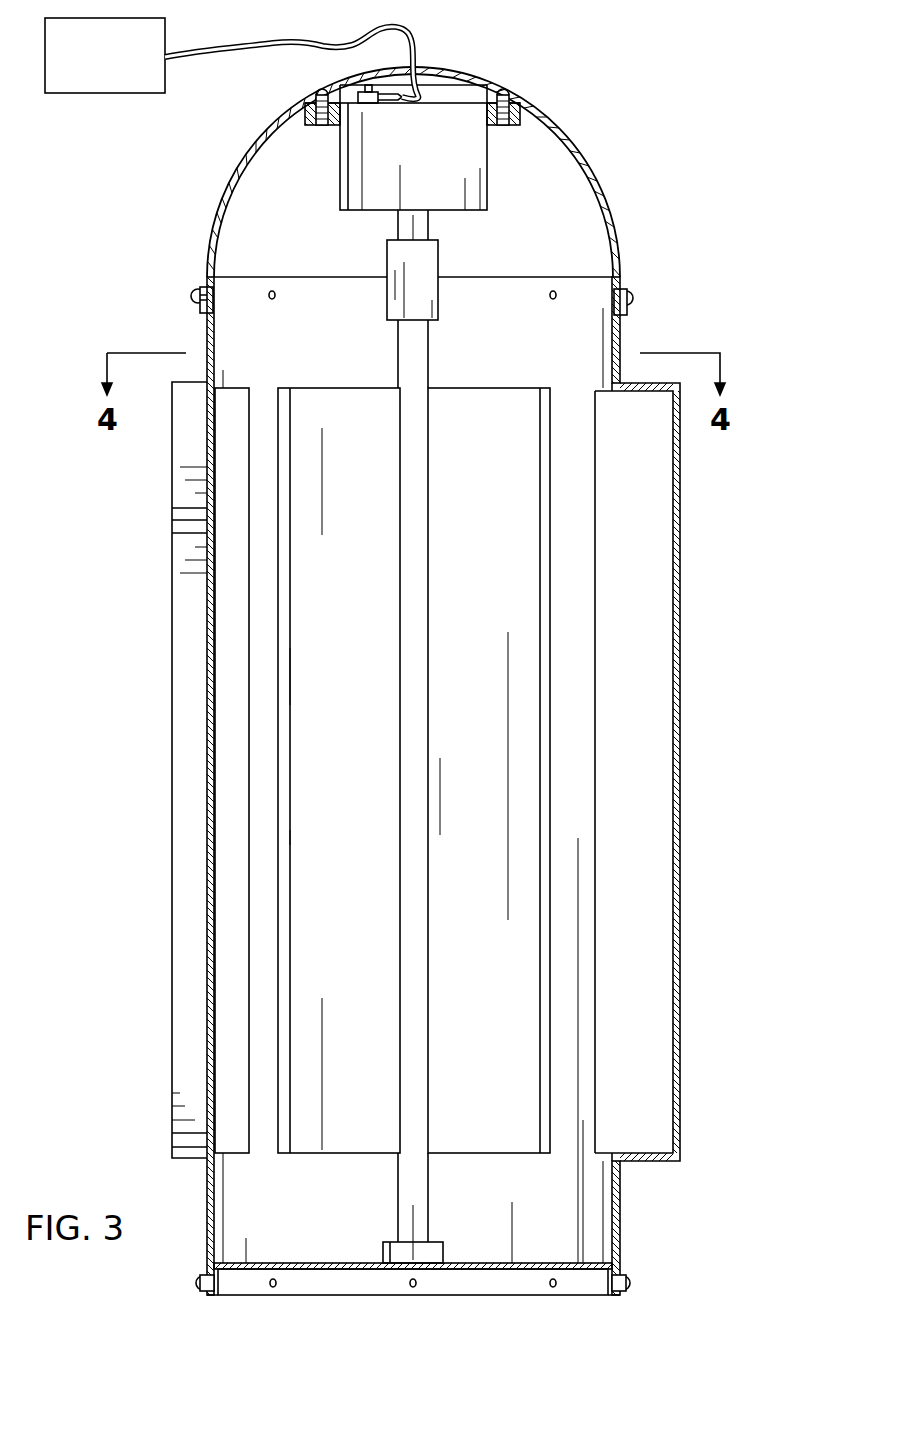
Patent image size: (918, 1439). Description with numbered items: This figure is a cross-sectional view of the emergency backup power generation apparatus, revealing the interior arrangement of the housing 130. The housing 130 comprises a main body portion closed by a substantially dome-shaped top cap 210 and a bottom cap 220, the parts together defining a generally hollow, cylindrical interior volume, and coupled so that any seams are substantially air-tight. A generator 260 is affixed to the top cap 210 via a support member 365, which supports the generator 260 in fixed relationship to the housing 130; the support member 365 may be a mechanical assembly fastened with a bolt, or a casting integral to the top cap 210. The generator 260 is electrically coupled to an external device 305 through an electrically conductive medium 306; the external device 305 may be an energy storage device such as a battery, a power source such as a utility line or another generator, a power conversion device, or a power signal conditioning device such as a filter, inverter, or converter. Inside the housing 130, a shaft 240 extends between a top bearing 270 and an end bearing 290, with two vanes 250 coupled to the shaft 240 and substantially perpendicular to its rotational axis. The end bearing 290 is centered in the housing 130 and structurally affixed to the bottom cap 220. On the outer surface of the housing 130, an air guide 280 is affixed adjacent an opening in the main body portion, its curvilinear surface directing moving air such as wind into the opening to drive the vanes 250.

The housing 130 is at (207, 671).
The top cap 210 is at (622, 232).
The bottom cap 220 is at (587, 1283).
The shaft 240 is at (398, 350).
The vanes 250 is at (362, 629).
The generator 260 is at (340, 188).
The top bearing 270 is at (438, 257).
The air guide 280 is at (680, 1000).
The end bearing 290 is at (383, 1255).
The external device 305 is at (125, 71).
The electrically conductive medium 306 is at (323, 43).
The support member 365 is at (500, 126).